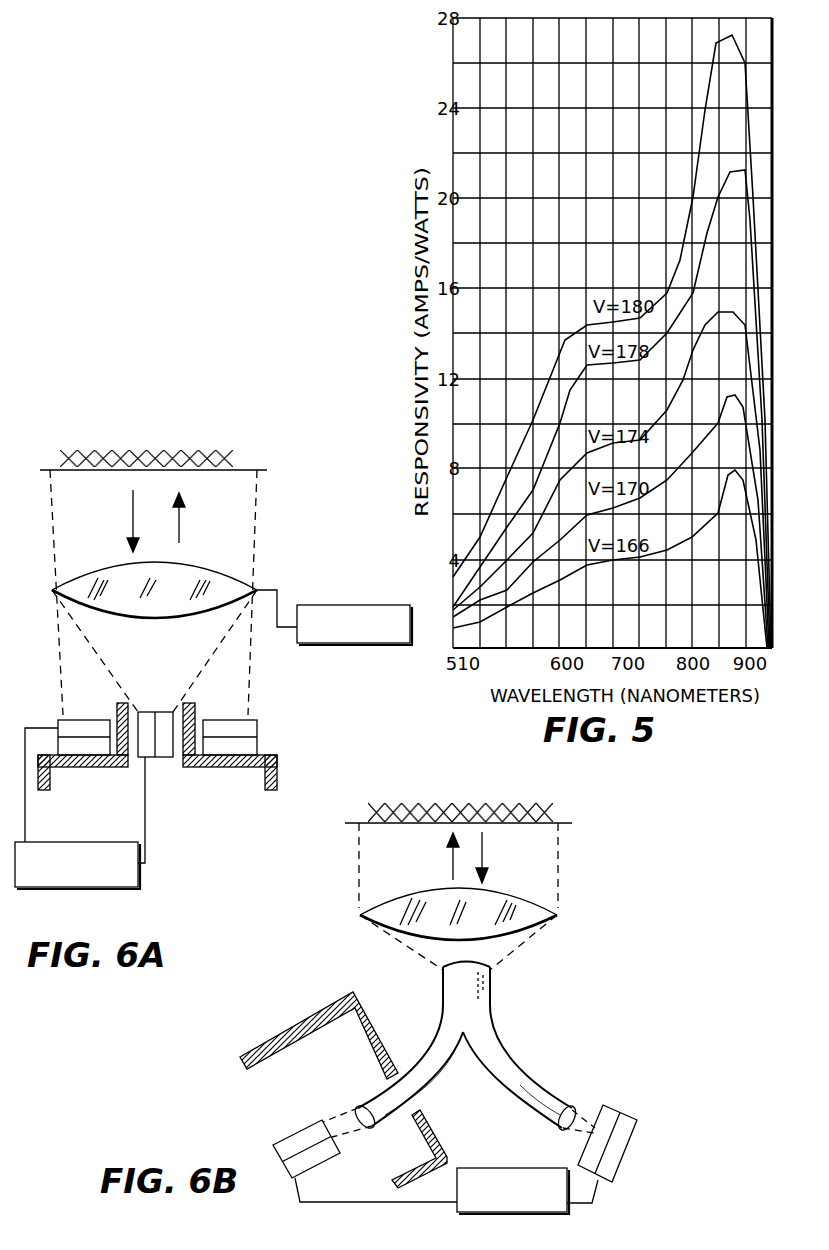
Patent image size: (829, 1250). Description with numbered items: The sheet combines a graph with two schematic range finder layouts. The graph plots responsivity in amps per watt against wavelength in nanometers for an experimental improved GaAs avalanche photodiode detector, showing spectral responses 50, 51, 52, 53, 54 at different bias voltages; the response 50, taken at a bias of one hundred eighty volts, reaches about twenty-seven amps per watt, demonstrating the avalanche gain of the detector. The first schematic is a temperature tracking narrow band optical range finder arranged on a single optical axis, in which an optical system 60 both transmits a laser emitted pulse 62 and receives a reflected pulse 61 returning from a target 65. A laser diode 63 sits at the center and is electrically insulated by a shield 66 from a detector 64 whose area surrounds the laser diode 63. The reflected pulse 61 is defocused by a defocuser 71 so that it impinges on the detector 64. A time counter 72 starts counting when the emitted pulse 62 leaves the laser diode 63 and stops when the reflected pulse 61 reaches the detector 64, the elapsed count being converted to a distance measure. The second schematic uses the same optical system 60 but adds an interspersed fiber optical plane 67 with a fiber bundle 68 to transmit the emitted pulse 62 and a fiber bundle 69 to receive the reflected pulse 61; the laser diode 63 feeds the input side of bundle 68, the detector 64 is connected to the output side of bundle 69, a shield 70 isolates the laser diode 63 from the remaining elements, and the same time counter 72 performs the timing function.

In FIG. 5, the spectral response 50 is at (678, 268).
In FIG. 5, the spectral response 51 is at (690, 318).
In FIG. 5, the spectral response 52 is at (703, 355).
In FIG. 5, the spectral response 53 is at (703, 438).
In FIG. 5, the spectral response 54 is at (706, 502).
In FIG. 6A, the optical system 60 is at (204, 570).
In FIG. 6B, the optical system 60 is at (530, 900).
In FIG. 6A, the reflected pulse 61 is at (132, 502).
In FIG. 6B, the reflected pulse 61 is at (484, 853).
In FIG. 6A, the laser emitted pulse 62 is at (181, 535).
In FIG. 6B, the laser emitted pulse 62 is at (452, 868).
In FIG. 6A, the laser diode 63 is at (163, 758).
In FIG. 6B, the laser diode 63 is at (320, 1164).
In FIG. 6A, the detector 64 is at (91, 718).
In FIG. 6B, the detector 64 is at (616, 1107).
In FIG. 6A, the target 65 is at (240, 470).
In FIG. 6B, the target 65 is at (560, 823).
In FIG. 6A, the shield 66 is at (278, 778).
In FIG. 6B, the interspersed fiber optical plane 67 is at (443, 1005).
In FIG. 6B, the fiber bundle 68 is at (427, 1092).
In FIG. 6B, the fiber bundle 69 is at (530, 1088).
In FIG. 6B, the shield 70 is at (321, 1008).
In FIG. 6A, the defocuser 71 is at (352, 604).
In FIG. 6A, the time counter 72 is at (62, 888).
In FIG. 6B, the time counter 72 is at (528, 1168).